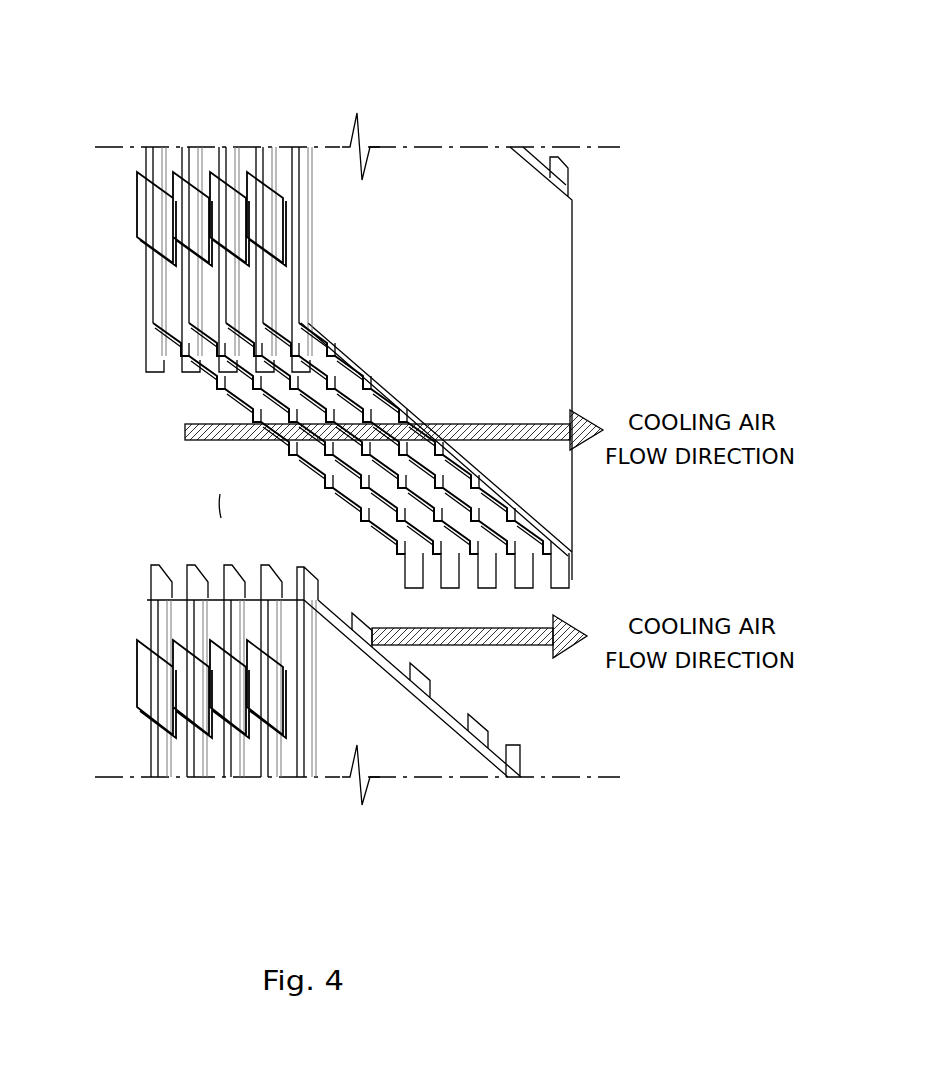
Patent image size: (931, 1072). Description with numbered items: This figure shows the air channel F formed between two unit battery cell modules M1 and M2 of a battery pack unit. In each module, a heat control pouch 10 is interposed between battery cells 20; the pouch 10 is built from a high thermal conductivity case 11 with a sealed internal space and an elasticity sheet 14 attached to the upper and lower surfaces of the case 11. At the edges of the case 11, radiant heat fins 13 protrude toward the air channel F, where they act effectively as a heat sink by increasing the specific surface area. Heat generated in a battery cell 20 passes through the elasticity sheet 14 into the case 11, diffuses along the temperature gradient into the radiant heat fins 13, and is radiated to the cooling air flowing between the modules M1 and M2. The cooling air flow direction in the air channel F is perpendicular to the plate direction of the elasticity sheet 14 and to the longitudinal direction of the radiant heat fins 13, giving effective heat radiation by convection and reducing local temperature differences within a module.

The heat control pouch 10 is at (399, 474).
The high thermal conductivity case 11 is at (297, 163).
The elasticity sheet 14 is at (307, 163).
The radiant heat fin 13 is at (565, 572).
The battery cell 20 is at (207, 150).
The unit battery cell module M1 is at (613, 302).
The unit battery cell module M2 is at (610, 746).
The air channel F is at (216, 508).